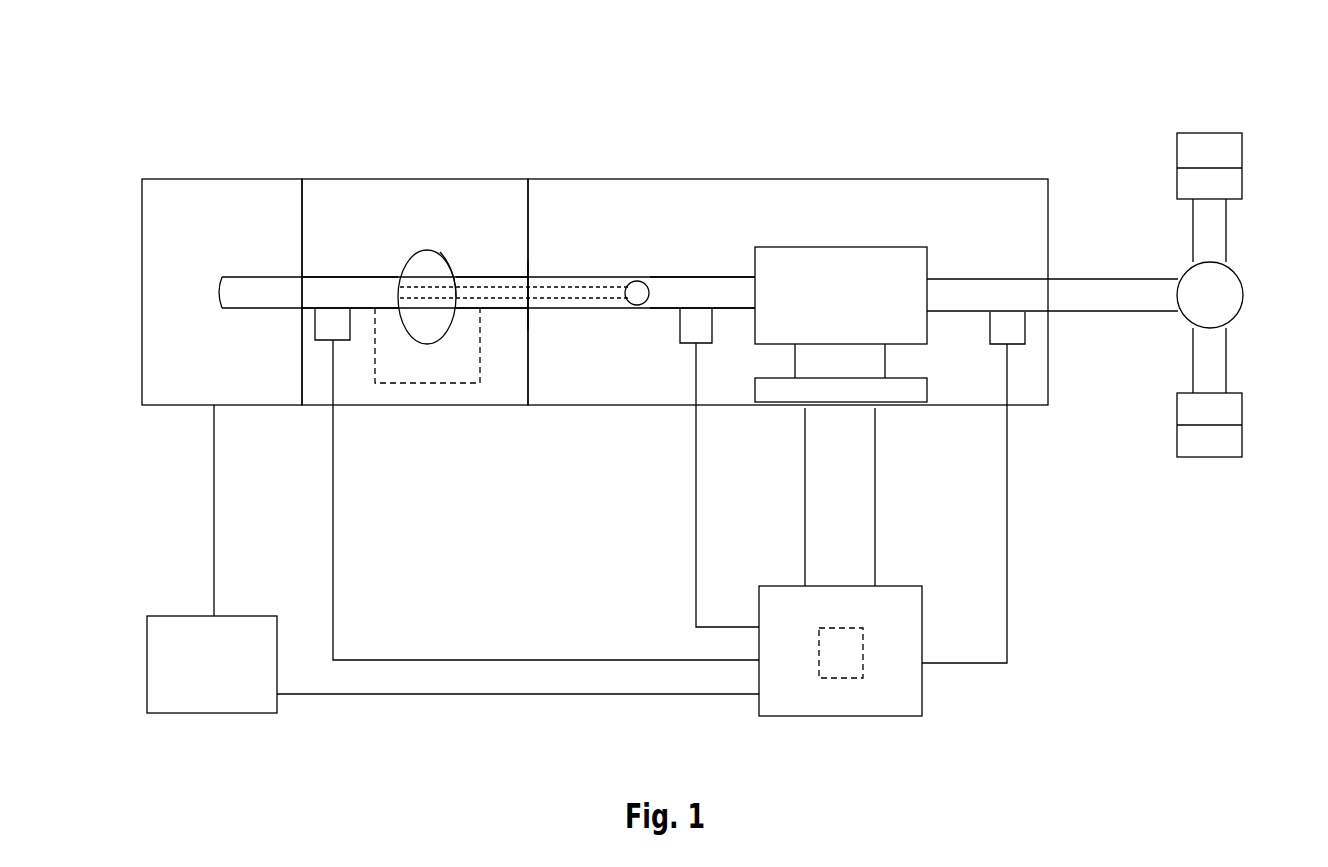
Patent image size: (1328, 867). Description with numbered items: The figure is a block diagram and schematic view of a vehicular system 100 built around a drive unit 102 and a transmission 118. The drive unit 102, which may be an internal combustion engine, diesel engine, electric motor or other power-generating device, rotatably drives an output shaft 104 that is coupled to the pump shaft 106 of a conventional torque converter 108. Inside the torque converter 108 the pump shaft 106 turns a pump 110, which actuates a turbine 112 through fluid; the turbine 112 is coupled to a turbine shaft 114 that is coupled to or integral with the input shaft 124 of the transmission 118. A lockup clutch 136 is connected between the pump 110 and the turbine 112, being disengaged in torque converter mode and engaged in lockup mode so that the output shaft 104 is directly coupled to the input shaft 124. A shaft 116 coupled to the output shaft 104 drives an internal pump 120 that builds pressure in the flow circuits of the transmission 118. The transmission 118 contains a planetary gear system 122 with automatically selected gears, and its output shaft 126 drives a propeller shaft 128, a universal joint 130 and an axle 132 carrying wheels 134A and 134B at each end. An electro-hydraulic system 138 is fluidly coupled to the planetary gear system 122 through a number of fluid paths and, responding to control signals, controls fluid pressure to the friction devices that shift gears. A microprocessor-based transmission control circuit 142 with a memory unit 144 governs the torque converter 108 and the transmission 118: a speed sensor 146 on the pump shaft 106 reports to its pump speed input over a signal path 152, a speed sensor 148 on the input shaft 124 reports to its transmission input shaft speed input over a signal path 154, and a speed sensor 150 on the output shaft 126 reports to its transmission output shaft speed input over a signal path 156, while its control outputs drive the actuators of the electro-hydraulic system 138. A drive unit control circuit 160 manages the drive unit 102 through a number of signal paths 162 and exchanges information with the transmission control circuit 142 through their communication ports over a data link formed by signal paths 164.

The vehicular system 100 is at (182, 112).
The drive unit 102 is at (248, 178).
The output shaft 104 is at (258, 273).
The pump shaft 106 is at (343, 275).
The torque converter 108 is at (422, 178).
The pump 110 is at (391, 236).
The turbine 112 is at (457, 252).
The turbine shaft 114 is at (497, 270).
The shaft 116 is at (548, 313).
The transmission 118 is at (790, 178).
The internal pump 120 is at (637, 280).
The planetary gear system 122 is at (862, 312).
The input shaft 124 is at (710, 270).
The output shaft 126 is at (985, 279).
The propeller shaft 128 is at (1112, 279).
The universal joint 130 is at (1232, 318).
The axle 132 is at (1226, 238).
The wheel 134A is at (1210, 133).
The wheel 134B is at (1210, 457).
The lockup clutch 136 is at (445, 385).
The electro-hydraulic system 138 is at (898, 392).
The transmission control circuit 142 is at (815, 716).
The memory unit 144 is at (850, 678).
The speed sensor 146 is at (302, 333).
The speed sensor 148 is at (687, 327).
The speed sensor 150 is at (1022, 327).
The signal path 152 is at (470, 658).
The signal path 154 is at (695, 520).
The signal path 156 is at (1007, 560).
The drive unit control circuit 160 is at (200, 713).
The signal paths 162 is at (214, 451).
The signal paths 164 is at (430, 694).